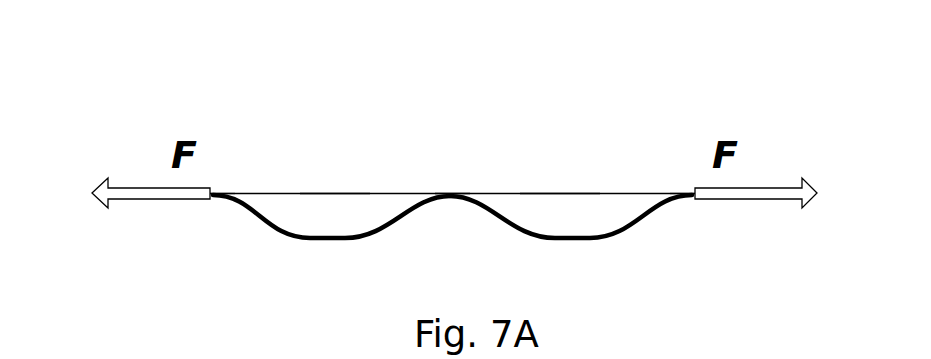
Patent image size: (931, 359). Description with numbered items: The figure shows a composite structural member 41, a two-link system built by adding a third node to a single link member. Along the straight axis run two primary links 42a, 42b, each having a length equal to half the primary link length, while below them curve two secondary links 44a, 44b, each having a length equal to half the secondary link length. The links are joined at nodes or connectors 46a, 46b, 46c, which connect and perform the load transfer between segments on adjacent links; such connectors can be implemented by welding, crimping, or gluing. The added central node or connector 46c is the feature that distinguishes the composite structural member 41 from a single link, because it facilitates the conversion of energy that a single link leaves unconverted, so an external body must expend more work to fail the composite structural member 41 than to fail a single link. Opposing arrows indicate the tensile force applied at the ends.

The composite structural member 41 is at (205, 67).
The primary link 42a is at (337, 193).
The primary link 42b is at (547, 193).
The secondary link 44a is at (332, 241).
The secondary link 44b is at (572, 241).
The connector 46a is at (222, 193).
The connector 46b is at (690, 193).
The node or connector 46c is at (460, 193).